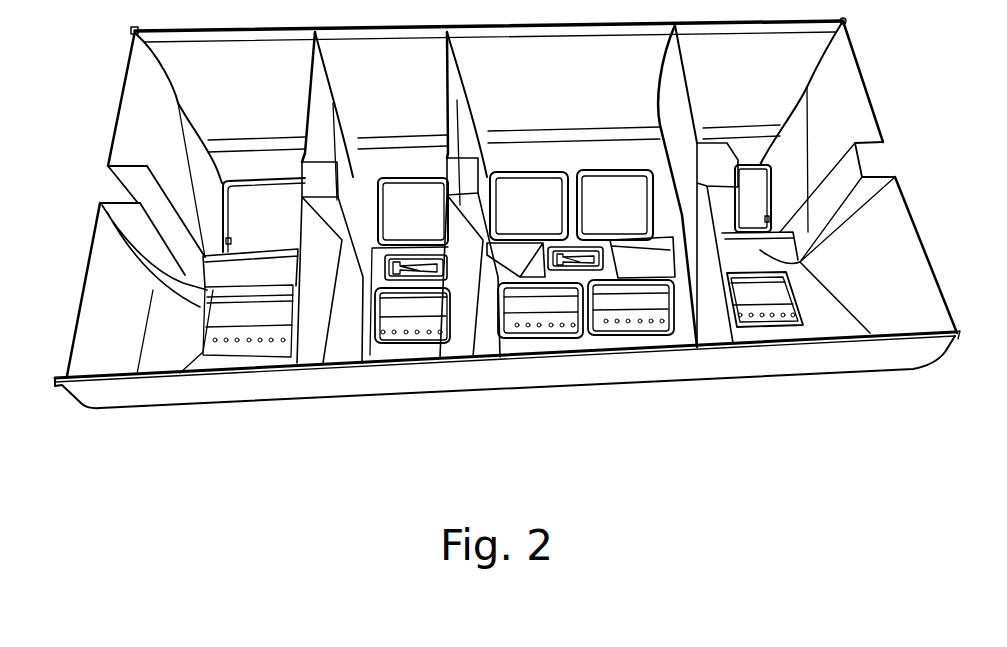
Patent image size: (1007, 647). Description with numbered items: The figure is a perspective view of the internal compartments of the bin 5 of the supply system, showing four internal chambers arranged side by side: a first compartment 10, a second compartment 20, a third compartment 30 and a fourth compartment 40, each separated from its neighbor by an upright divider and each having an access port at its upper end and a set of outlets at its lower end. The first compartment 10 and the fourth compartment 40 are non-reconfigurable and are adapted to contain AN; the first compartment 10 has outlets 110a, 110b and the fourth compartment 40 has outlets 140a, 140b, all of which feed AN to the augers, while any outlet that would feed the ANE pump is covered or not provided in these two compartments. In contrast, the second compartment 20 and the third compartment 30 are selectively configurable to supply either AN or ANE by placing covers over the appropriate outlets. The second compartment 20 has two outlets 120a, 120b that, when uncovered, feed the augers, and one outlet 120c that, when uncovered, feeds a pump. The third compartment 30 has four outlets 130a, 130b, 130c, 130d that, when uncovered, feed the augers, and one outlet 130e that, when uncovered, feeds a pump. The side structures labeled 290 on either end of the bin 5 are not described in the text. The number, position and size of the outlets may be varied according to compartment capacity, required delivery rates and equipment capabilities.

The bin 5 is at (714, 449).
The first compartment 10 is at (253, 98).
The second compartment 20 is at (399, 92).
The third compartment 30 is at (575, 90).
The fourth compartment 40 is at (759, 87).
The outlet 110a is at (236, 181).
The outlet 110b is at (228, 282).
The outlet 120a is at (382, 178).
The outlet 120b is at (420, 343).
The outlet 120c is at (428, 256).
The outlet 130a is at (503, 172).
The outlet 130b is at (637, 170).
The outlet 130c is at (553, 338).
The outlet 130d is at (645, 332).
The outlet 130e is at (563, 247).
The outlet 140a is at (740, 165).
The outlet 140b is at (783, 328).
The wheel arch fender 290 is at (122, 212).